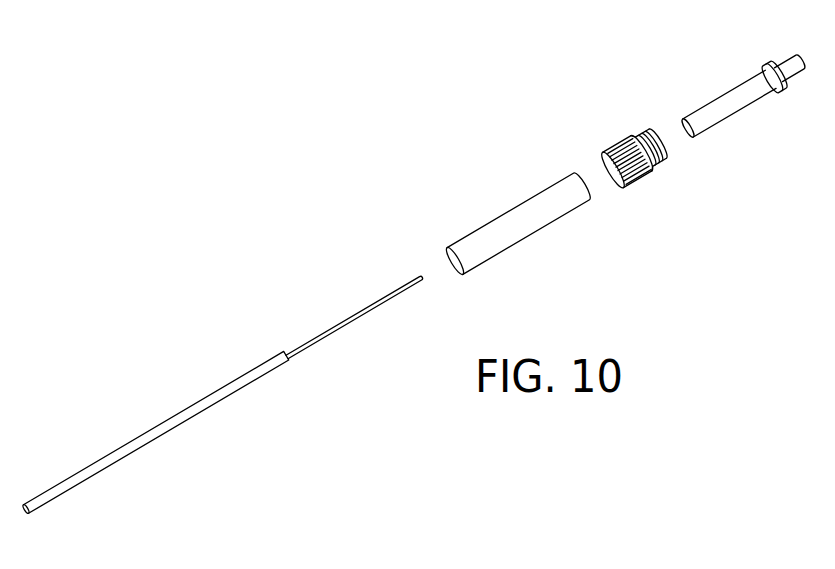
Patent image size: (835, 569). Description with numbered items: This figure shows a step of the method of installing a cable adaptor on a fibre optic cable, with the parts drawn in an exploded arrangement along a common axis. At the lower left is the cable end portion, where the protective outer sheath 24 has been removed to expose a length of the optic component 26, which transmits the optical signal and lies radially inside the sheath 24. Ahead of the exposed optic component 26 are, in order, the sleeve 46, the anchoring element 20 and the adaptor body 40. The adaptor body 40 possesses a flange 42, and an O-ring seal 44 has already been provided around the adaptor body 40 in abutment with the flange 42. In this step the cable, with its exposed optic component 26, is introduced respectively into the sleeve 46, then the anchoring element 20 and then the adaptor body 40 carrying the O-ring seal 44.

The anchoring element 20 is at (615, 145).
The outer protective sheath 24 is at (125, 445).
The optic component 26 is at (350, 318).
The adaptor body 40 is at (712, 98).
The flange 42 is at (768, 70).
The O-ring seal 44 is at (792, 83).
The sleeve 46 is at (508, 212).